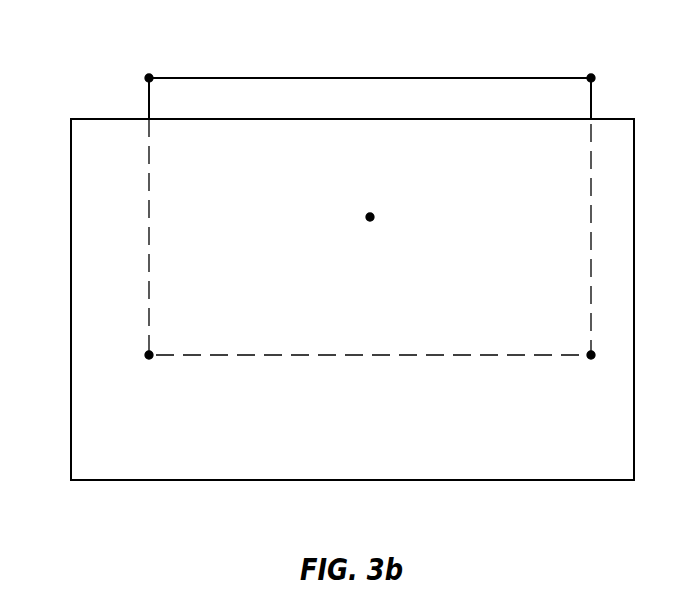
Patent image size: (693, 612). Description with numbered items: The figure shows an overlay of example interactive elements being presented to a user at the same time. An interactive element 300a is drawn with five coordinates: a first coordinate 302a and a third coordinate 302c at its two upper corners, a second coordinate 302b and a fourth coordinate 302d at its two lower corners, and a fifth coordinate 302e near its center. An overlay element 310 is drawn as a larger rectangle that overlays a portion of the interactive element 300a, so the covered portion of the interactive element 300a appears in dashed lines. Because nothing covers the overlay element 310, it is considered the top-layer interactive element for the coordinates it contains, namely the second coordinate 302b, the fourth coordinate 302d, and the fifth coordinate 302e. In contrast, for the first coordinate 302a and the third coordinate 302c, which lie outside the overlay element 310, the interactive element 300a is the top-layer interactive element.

The overlay element 310 is at (402, 480).
The interactive element 300a is at (402, 78).
The first coordinate 302a is at (146, 72).
The second coordinate 302b is at (153, 362).
The third coordinate 302c is at (595, 72).
The fourth coordinate 302d is at (587, 362).
The fifth coordinate 302e is at (375, 210).